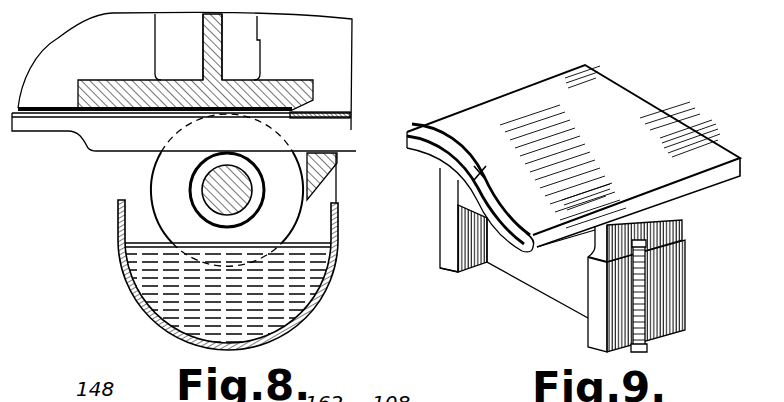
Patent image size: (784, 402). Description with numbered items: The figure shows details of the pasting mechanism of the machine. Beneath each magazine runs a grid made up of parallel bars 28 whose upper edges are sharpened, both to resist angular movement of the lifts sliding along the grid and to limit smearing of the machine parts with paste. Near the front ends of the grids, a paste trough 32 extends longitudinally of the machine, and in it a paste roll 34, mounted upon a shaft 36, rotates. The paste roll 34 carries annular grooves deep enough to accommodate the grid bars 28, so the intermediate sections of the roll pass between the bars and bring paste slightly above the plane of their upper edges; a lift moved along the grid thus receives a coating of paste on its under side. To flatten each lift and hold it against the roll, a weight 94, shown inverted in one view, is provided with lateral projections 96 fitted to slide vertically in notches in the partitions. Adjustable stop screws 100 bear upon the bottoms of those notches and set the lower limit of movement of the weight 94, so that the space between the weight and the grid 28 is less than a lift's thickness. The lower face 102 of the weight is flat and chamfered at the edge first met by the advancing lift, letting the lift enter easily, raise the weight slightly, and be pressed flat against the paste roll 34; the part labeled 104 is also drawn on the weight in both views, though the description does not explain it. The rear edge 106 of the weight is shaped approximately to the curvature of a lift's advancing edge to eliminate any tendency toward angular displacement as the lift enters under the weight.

In FIG. 8, the grid bars 28 is at (184, 158).
In FIG. 8, the paste trough 32 is at (118, 237).
In FIG. 8, the paste roll 34 is at (167, 190).
In FIG. 8, the shaft 36 is at (221, 203).
In FIG. 8, the weight 94 is at (195, 62).
In FIG. 9, the weight 94 is at (541, 268).
In FIG. 9, the lateral projections 96 is at (448, 212).
In FIG. 9, the stop screws 100 is at (646, 347).
In FIG. 9, the lower face 102 is at (573, 156).
In FIG. 8, the wear strip 104 is at (312, 112).
In FIG. 9, the wear strip 104 is at (434, 143).
In FIG. 9, the rear edge 106 is at (480, 176).